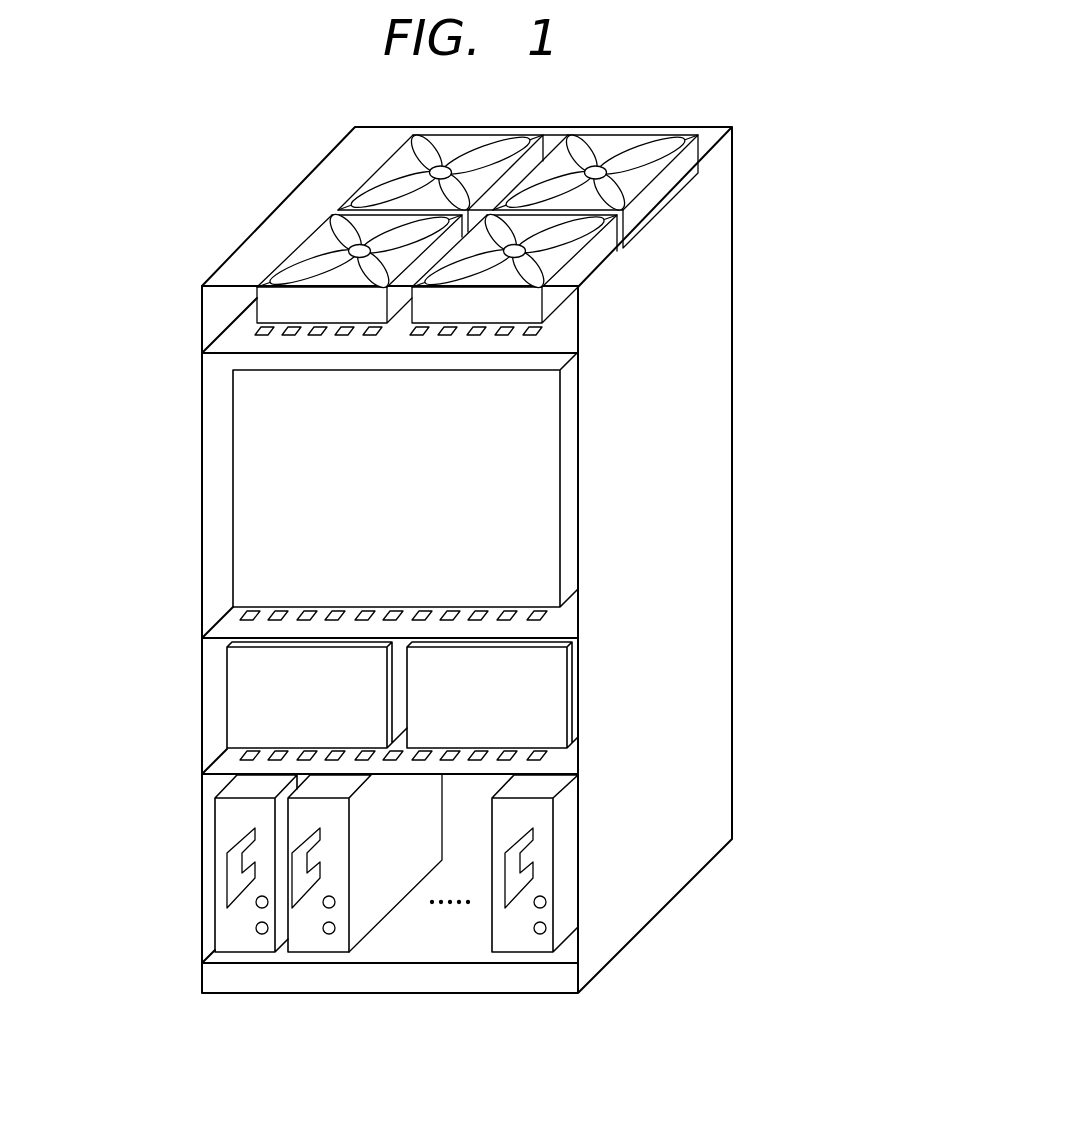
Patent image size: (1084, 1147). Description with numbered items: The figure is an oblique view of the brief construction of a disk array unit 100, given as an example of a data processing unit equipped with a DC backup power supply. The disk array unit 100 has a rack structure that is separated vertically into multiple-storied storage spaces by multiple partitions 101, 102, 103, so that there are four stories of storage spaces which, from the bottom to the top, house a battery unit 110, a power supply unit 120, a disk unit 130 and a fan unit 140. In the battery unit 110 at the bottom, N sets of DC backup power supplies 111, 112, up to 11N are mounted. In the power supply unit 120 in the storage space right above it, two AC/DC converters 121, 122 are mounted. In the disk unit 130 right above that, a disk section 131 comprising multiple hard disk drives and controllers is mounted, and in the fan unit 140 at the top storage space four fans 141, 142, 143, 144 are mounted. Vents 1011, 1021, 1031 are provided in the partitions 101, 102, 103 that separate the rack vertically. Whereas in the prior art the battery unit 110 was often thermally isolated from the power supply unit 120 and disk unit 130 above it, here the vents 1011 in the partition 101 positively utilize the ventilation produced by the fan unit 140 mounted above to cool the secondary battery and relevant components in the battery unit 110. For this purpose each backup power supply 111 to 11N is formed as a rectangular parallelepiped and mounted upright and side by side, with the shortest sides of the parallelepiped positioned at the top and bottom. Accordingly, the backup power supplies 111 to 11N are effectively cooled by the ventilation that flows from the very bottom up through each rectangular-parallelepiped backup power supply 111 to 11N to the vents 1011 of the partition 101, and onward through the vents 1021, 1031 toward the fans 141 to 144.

The disk array unit 100 is at (710, 390).
The partition 101 is at (205, 798).
The partition 102 is at (205, 648).
The partition 103 is at (233, 347).
The battery unit 110 is at (205, 893).
The DC backup power supply 111 is at (240, 943).
The DC backup power supply 112 is at (316, 943).
The DC backup power supply 11N is at (520, 943).
The power supply unit 120 is at (207, 700).
The AC/DC converter 121 is at (372, 698).
The AC/DC converter 122 is at (553, 688).
The disk unit 130 is at (209, 494).
The disk section 131 is at (540, 486).
The fan unit 140 is at (210, 313).
The fan 141 is at (367, 179).
The fan 142 is at (300, 243).
The fan 143 is at (645, 187).
The fan 144 is at (583, 281).
The vents 1011 is at (545, 755).
The vents 1021 is at (548, 616).
The vents 1031 is at (537, 333).